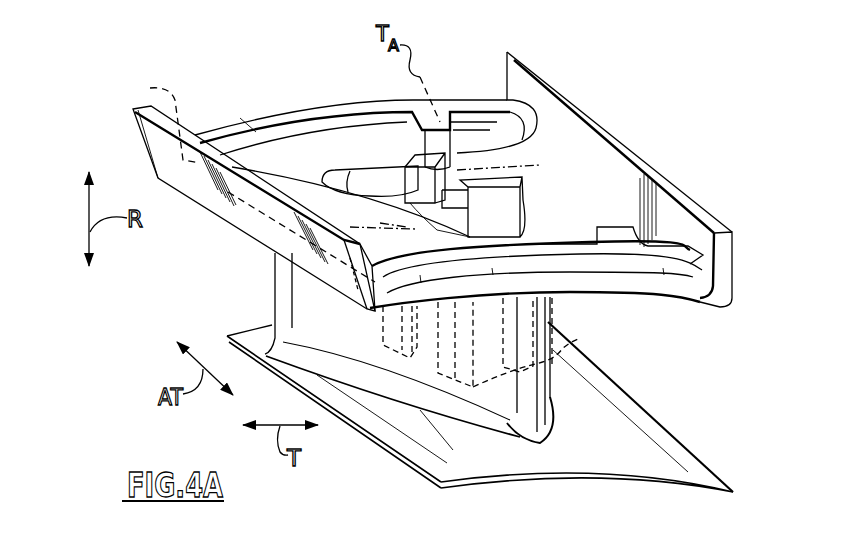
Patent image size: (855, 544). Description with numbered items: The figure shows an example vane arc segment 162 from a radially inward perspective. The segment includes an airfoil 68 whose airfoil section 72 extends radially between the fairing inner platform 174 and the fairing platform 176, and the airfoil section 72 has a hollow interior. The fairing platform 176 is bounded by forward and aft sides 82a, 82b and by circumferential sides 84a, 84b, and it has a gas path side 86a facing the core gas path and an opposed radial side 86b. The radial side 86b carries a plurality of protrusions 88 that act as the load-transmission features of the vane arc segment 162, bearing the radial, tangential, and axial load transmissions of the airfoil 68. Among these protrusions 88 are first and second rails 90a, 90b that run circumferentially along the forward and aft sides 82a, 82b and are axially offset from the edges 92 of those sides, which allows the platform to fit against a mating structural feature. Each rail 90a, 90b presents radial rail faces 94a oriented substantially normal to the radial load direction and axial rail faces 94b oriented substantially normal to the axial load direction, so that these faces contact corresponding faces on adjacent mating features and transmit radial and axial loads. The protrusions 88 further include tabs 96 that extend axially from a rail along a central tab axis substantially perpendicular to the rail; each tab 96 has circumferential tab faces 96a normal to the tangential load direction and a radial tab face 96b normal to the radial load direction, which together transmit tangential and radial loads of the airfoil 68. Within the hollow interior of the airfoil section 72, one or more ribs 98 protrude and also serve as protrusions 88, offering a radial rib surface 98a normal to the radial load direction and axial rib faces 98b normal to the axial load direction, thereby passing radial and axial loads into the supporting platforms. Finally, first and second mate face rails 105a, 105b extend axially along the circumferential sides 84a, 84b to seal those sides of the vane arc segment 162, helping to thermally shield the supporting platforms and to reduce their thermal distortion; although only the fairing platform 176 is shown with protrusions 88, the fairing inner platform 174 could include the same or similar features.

The airfoil 68 is at (560, 318).
The airfoil section 72 is at (527, 408).
The forward side 82a is at (730, 290).
The aft side 82b is at (507, 68).
The circumferential side 84a is at (675, 172).
The circumferential side 84b is at (268, 235).
The gas path side 86a is at (673, 305).
The radial side 86b is at (553, 197).
The protrusions 88 is at (372, 101).
The first rail 90a is at (247, 124).
The second rail 90b is at (657, 239).
The edges 92 is at (641, 339).
The radial rail faces 94a is at (308, 122).
The axial rail faces 94b is at (364, 128).
The tabs 96 is at (474, 141).
The circumferential tab faces 96a is at (512, 62).
The radial tab face 96b is at (445, 130).
The ribs 98 is at (456, 181).
The radial rib surface 98a is at (404, 157).
The axial rib faces 98b is at (604, 218).
The first mate face rail 105a is at (157, 153).
The second mate face rail 105b is at (537, 82).
The vane arc segment 162 is at (160, 318).
The fairing inner platform 174 is at (677, 452).
The fairing platform 176 is at (687, 300).